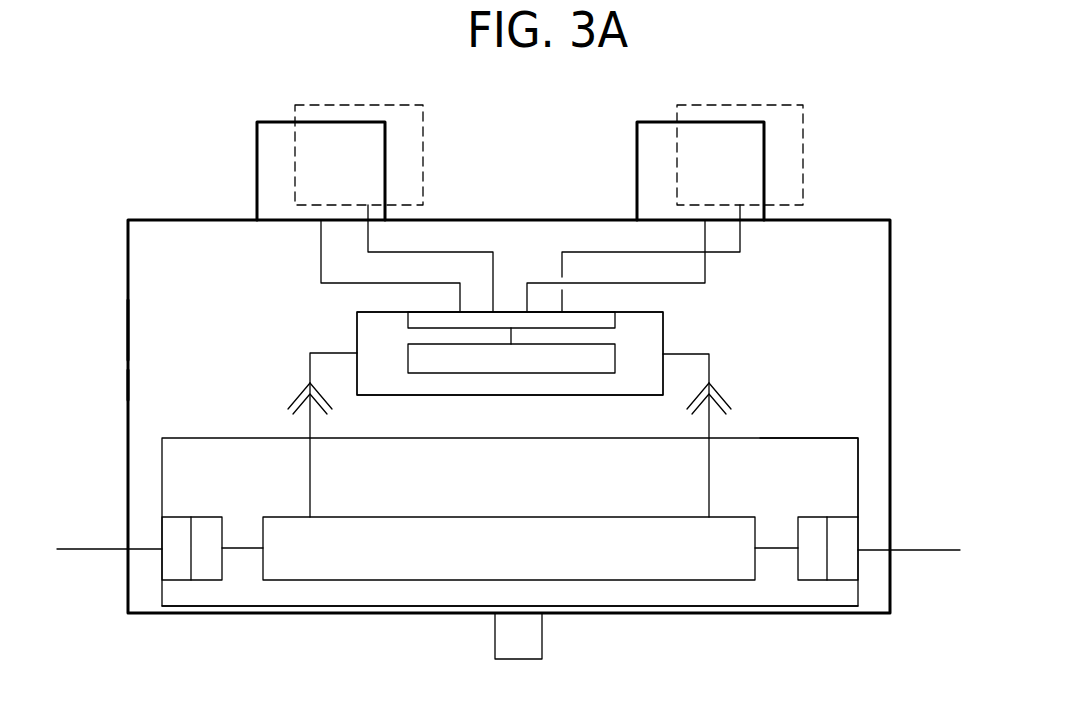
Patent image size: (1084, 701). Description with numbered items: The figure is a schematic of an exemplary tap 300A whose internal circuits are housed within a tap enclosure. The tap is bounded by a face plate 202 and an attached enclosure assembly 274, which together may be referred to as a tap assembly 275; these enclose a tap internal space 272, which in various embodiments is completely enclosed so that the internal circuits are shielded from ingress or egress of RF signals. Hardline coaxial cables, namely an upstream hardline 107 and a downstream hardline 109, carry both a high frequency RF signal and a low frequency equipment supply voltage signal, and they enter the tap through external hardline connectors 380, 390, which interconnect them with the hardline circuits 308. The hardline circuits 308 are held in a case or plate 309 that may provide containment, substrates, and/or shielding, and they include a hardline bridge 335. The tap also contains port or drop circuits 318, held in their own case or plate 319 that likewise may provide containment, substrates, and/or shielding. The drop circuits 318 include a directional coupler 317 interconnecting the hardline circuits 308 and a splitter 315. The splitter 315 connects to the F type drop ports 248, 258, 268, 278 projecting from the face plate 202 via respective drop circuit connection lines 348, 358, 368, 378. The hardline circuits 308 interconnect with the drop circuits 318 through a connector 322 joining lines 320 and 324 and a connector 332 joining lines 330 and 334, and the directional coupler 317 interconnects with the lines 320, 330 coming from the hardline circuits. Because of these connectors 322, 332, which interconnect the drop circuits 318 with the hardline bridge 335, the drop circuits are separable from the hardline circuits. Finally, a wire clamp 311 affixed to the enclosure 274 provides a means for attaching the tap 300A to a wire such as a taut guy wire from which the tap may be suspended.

The upstream hardline 107 is at (105, 550).
The downstream hardline 109 is at (940, 550).
The face plate 202 is at (832, 218).
The drop port 248 is at (256, 180).
The drop port 258 is at (424, 118).
The drop port 268 is at (637, 191).
The tap internal space 272 is at (160, 382).
The enclosure assembly 274 is at (127, 328).
The tap assembly 275 is at (309, 624).
The drop port 278 is at (803, 186).
The tap 300A is at (866, 124).
The hardline circuits 308 is at (838, 476).
The case or plate 309 is at (763, 438).
The wire clamp 311 is at (544, 638).
The splitter 315 is at (407, 320).
The directional coupler 317 is at (427, 363).
The drop circuits 318 is at (584, 398).
The case or plate 319 is at (477, 398).
The line 320 is at (312, 490).
The connector 322 is at (288, 405).
The line 324 is at (312, 367).
The line 330 is at (707, 494).
The connector 332 is at (725, 392).
The line 334 is at (713, 367).
The hardline bridge 335 is at (732, 572).
The drop circuit connection line 348 is at (315, 261).
The drop circuit connection line 358 is at (375, 252).
The drop circuit connection line 368 is at (690, 287).
The drop circuit connection line 378 is at (725, 255).
The external hardline connector 380 is at (210, 578).
The external hardline connector 390 is at (815, 572).